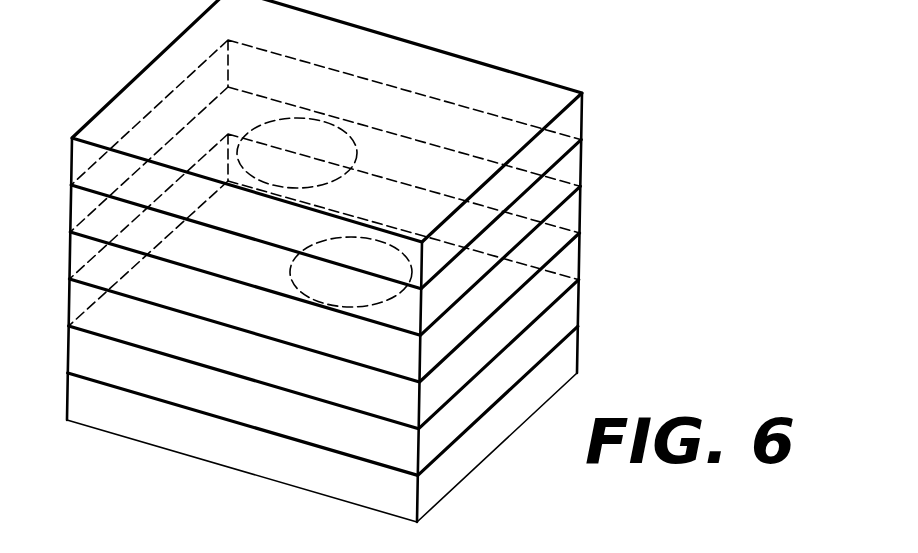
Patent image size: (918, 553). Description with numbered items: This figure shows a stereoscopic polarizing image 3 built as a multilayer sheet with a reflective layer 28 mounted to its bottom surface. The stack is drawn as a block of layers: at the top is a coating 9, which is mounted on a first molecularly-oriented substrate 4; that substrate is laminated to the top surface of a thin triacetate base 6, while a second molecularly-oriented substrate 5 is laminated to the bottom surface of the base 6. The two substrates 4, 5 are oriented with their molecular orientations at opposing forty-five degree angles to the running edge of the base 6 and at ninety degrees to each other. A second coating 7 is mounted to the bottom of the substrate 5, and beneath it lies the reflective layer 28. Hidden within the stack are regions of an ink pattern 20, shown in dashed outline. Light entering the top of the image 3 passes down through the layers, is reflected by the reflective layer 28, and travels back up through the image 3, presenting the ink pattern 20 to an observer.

The stereoscopic polarizing image 3 is at (395, 55).
The coating 9 is at (572, 123).
The first molecularly-oriented substrate 4 is at (572, 163).
The triacetate base 6 is at (572, 213).
The second molecularly-oriented substrate 5 is at (572, 259).
The second coating 7 is at (571, 305).
The reflective layer 28 is at (571, 348).
The ink pattern 20 is at (343, 128).